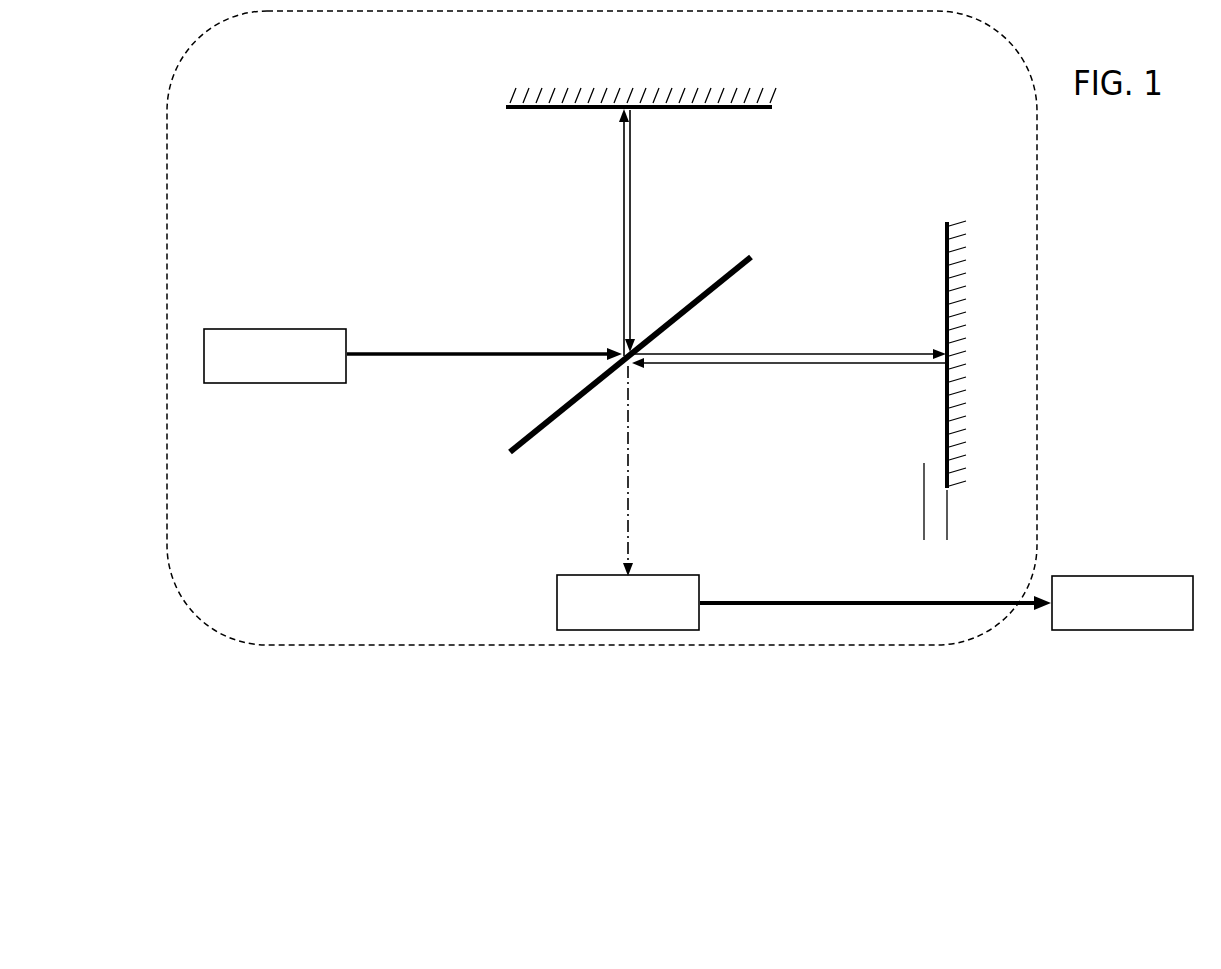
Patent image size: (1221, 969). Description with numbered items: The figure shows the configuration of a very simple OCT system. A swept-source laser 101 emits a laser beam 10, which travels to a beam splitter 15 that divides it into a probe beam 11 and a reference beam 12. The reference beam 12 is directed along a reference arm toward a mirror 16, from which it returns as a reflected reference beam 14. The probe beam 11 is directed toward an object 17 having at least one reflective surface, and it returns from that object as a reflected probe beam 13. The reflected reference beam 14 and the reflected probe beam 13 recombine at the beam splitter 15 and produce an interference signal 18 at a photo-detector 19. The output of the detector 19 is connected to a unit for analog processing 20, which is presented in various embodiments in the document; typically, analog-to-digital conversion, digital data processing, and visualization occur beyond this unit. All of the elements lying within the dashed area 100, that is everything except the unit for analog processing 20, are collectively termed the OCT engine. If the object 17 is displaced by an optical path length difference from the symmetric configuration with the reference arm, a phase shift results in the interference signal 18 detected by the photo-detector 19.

The dashed area 100 is at (602, 328).
The swept-source laser 101 is at (275, 356).
The laser beam 10 is at (440, 348).
The probe beam 11 is at (750, 346).
The reference beam 12 is at (614, 174).
The reflected probe beam 13 is at (760, 374).
The reflected reference beam 14 is at (640, 190).
The beam splitter 15 is at (648, 348).
The mirror 16 is at (641, 76).
The object 17 is at (968, 393).
The interference signal 18 is at (645, 463).
The photo-detector 19 is at (628, 602).
The unit for analog processing 20 is at (946, 603).